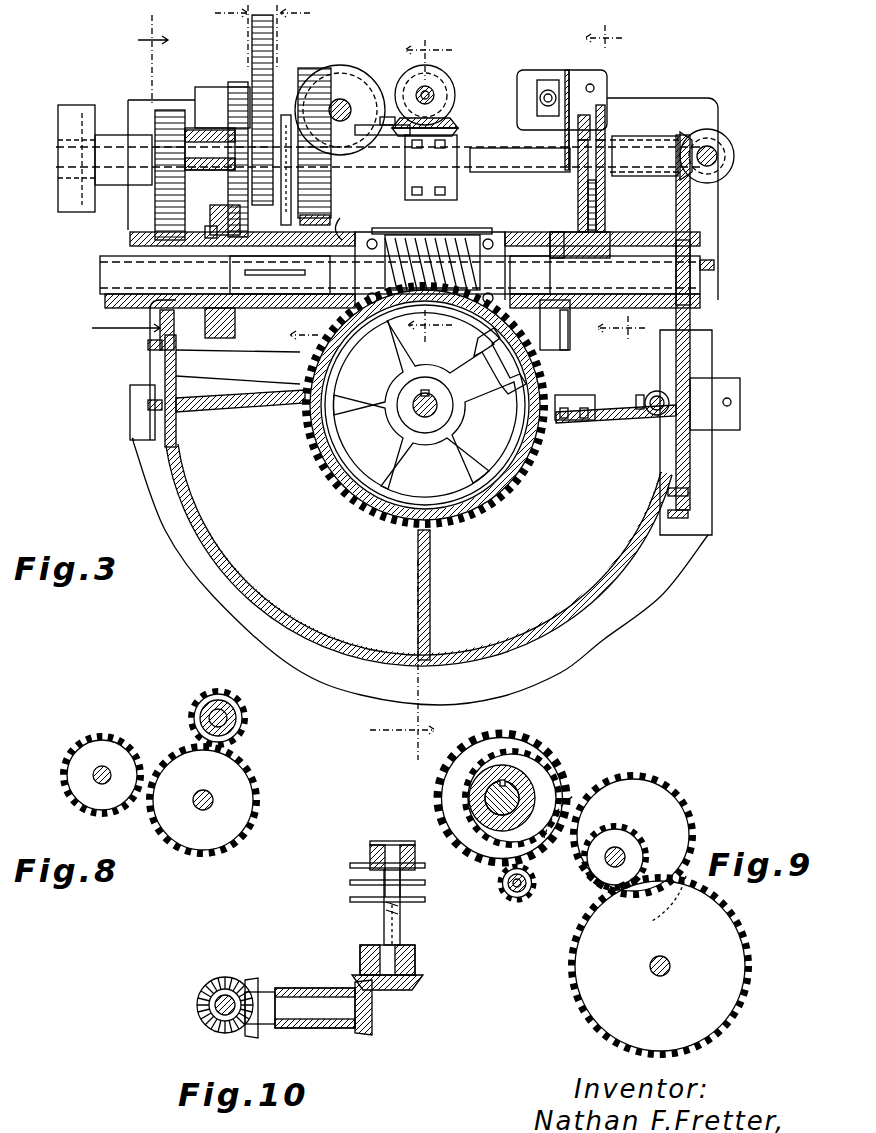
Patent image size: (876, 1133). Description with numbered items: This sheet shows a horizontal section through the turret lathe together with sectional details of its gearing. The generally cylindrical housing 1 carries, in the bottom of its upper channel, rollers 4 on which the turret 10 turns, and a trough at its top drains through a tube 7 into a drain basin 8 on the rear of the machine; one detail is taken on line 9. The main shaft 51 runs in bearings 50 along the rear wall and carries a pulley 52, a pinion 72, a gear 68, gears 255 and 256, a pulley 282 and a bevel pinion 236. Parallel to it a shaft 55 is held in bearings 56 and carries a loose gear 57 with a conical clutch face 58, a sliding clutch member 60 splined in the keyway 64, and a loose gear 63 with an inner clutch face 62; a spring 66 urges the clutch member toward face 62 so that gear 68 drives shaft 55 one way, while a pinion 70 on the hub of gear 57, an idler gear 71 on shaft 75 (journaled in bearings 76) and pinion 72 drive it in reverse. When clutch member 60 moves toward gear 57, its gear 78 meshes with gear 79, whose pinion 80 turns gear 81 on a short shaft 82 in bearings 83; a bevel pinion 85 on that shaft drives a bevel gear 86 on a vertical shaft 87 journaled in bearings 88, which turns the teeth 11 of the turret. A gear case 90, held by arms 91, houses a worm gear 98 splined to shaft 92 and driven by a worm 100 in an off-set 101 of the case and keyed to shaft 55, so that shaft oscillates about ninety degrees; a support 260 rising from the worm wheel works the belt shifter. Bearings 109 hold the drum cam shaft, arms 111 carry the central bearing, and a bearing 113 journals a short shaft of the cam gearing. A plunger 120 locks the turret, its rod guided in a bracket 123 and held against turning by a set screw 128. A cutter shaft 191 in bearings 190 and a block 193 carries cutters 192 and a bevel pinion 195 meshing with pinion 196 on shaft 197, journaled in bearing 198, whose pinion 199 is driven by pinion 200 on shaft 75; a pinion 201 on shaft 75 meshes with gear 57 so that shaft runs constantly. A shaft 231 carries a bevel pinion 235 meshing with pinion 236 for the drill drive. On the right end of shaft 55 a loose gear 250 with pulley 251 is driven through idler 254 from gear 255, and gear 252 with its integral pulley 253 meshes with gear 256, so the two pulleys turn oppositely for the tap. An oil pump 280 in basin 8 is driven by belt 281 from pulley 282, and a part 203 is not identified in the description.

In FIG. 3, the housing 1 is at (500, 650).
In FIG. 3, the rollers 4 is at (322, 385).
In FIG. 3, the tube 7 is at (595, 86).
In FIG. 3, the drain basin 8 is at (636, 108).
In FIG. 3, the section line 9 is at (299, 174).
In FIG. 3, the turret 10 is at (428, 182).
In FIG. 3, the teeth 11 is at (625, 173).
In FIG. 3, the bearings 50 is at (112, 183).
In FIG. 3, the main shaft 51 is at (601, 169).
In FIG. 8, the main shaft 51 is at (108, 776).
In FIG. 9, the main shaft 51 is at (626, 860).
In FIG. 3, the pulley 52 is at (78, 105).
In FIG. 3, the shaft 55 is at (530, 275).
In FIG. 8, the shaft 55 is at (240, 735).
In FIG. 3, the bearings 56 is at (152, 405).
In FIG. 3, the gear 57 is at (236, 336).
In FIG. 8, the gear 57 is at (202, 708).
In FIG. 9, the gear 57 is at (497, 732).
In FIG. 3, the conical clutch face 58 is at (212, 207).
In FIG. 3, the sliding clutch member 60 is at (280, 275).
In FIG. 3, the clutch face 62 is at (331, 220).
In FIG. 3, the gear 63 is at (305, 360).
In FIG. 3, the keyway 64 is at (275, 263).
In FIG. 9, the keyway 64 is at (504, 790).
In FIG. 3, the spring 66 is at (245, 280).
In FIG. 3, the gear 68 is at (331, 186).
In FIG. 3, the pinion 70 is at (205, 232).
In FIG. 8, the pinion 70 is at (218, 690).
In FIG. 3, the idler gear 71 is at (180, 350).
In FIG. 8, the idler gear 71 is at (250, 805).
In FIG. 3, the pinion 72 is at (160, 112).
In FIG. 8, the pinion 72 is at (110, 740).
In FIG. 8, the shaft 75 is at (210, 796).
In FIG. 9, the shaft 75 is at (506, 890).
In FIG. 10, the shaft 75 is at (214, 1010).
In FIG. 3, the bearings 76 is at (130, 236).
In FIG. 3, the gear 78 is at (262, 338).
In FIG. 9, the gear 78 is at (548, 758).
In FIG. 3, the gear 79 is at (240, 182).
In FIG. 9, the gear 79 is at (632, 776).
In FIG. 3, the pinion 80 is at (210, 150).
In FIG. 9, the pinion 80 is at (626, 838).
In FIG. 3, the gear 81 is at (262, 56).
In FIG. 9, the gear 81 is at (747, 975).
In FIG. 3, the short shaft 82 is at (190, 108).
In FIG. 9, the short shaft 82 is at (670, 964).
In FIG. 3, the bearings 83 is at (212, 96).
In FIG. 3, the bevel pinion 85 is at (286, 115).
In FIG. 3, the bevel gear 86 is at (360, 72).
In FIG. 3, the vertical shaft 87 is at (342, 98).
In FIG. 3, the bearings 88 is at (375, 136).
In FIG. 3, the gear case 90 is at (478, 508).
In FIG. 3, the arms 91 is at (215, 412).
In FIG. 3, the shaft 92 is at (436, 396).
In FIG. 3, the worm gear 98 is at (395, 464).
In FIG. 3, the worm 100 is at (505, 234).
In FIG. 3, the off-set 101 is at (372, 230).
In FIG. 3, the bearings 109 is at (132, 420).
In FIG. 3, the arms 111 is at (252, 369).
In FIG. 3, the bearing 113 is at (566, 420).
In FIG. 3, the plunger 120 is at (655, 416).
In FIG. 3, the bracket 123 is at (712, 452).
In FIG. 3, the set screw 128 is at (640, 410).
In FIG. 10, the bearings 190 is at (416, 960).
In FIG. 3, the shaft 191 is at (432, 90).
In FIG. 10, the shaft 191 is at (370, 852).
In FIG. 10, the cutters 192 is at (350, 899).
In FIG. 10, the block 193 is at (392, 842).
In FIG. 3, the bevel pinion 195 is at (450, 120).
In FIG. 10, the bevel pinion 195 is at (424, 984).
In FIG. 3, the bevel pinion 196 is at (452, 130).
In FIG. 10, the bevel pinion 196 is at (368, 1028).
In FIG. 3, the shaft 197 is at (520, 160).
In FIG. 10, the shaft 197 is at (320, 986).
In FIG. 3, the bearing 198 is at (406, 180).
In FIG. 10, the bearing 198 is at (306, 1028).
In FIG. 3, the bevel pinion 199 is at (425, 208).
In FIG. 10, the bevel pinion 199 is at (258, 986).
In FIG. 3, the bevel pinion 200 is at (433, 236).
In FIG. 10, the bevel pinion 200 is at (226, 978).
In FIG. 9, the pinion 201 is at (522, 900).
In FIG. 3, the bracket 203 is at (567, 330).
In FIG. 3, the shaft 231 is at (720, 148).
In FIG. 3, the bevel pinion 235 is at (738, 158).
In FIG. 3, the bevel pinion 236 is at (692, 176).
In FIG. 3, the gear 250 is at (595, 239).
In FIG. 3, the pulley 251 is at (542, 241).
In FIG. 3, the gear 252 is at (568, 186).
In FIG. 3, the pulley 253 is at (574, 205).
In FIG. 3, the idler 254 is at (606, 222).
In FIG. 3, the gear 255 is at (604, 118).
In FIG. 3, the gear 256 is at (584, 116).
In FIG. 3, the support 260 is at (494, 392).
In FIG. 3, the oil pump 280 is at (548, 90).
In FIG. 3, the belt 281 is at (569, 80).
In FIG. 3, the pulley 282 is at (544, 120).